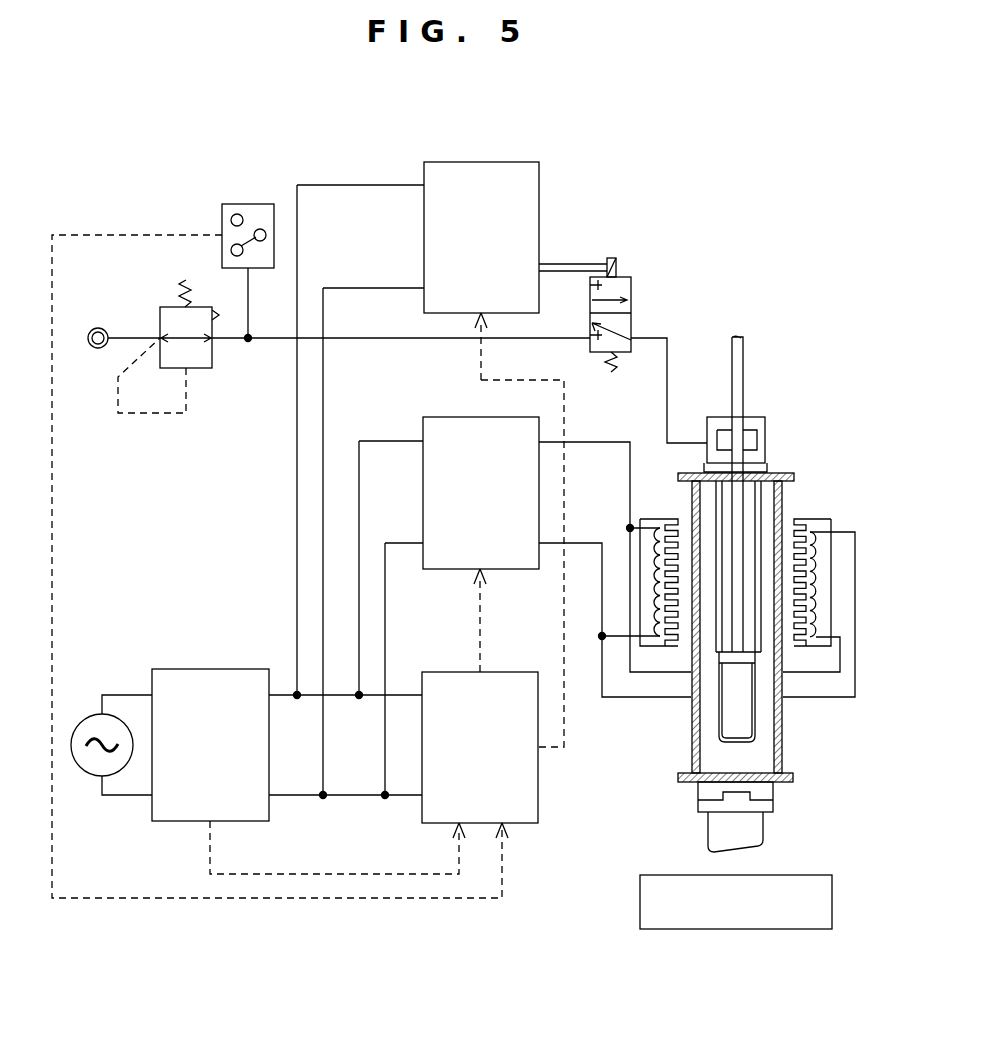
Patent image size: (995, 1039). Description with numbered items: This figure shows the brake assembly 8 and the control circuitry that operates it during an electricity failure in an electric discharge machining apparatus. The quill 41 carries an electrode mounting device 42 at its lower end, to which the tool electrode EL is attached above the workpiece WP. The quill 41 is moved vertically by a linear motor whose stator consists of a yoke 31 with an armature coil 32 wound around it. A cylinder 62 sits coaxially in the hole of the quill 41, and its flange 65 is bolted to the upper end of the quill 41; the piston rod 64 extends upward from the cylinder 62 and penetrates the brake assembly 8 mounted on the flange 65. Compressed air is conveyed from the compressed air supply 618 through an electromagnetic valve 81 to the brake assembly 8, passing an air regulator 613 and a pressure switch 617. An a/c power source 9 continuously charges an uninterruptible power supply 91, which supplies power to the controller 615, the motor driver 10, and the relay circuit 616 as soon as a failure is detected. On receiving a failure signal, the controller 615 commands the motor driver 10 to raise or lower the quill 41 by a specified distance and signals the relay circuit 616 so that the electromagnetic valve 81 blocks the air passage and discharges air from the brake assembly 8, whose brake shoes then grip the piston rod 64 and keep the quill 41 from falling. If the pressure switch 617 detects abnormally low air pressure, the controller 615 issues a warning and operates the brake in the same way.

The relay circuit 616 is at (515, 161).
The pressure switch 617 is at (230, 204).
The compressed air supply 618 is at (98, 328).
The air regulator 613 is at (197, 363).
The electromagnetic valve 81 is at (627, 276).
The motor driver 10 is at (452, 416).
The uninterruptible power supply 91 is at (192, 669).
The a/c power source 9 is at (85, 765).
The controller 615 is at (537, 793).
The piston rod 64 is at (742, 360).
The brake assembly 8 is at (758, 417).
The flange 65 is at (767, 467).
The quill 41 is at (782, 736).
The cylinder 62 is at (716, 722).
The yoke 31 is at (645, 518).
The armature coil 32 is at (652, 623).
The electrode mounting device 42 is at (778, 805).
The tool electrode EL is at (760, 833).
The workpiece WP is at (668, 929).